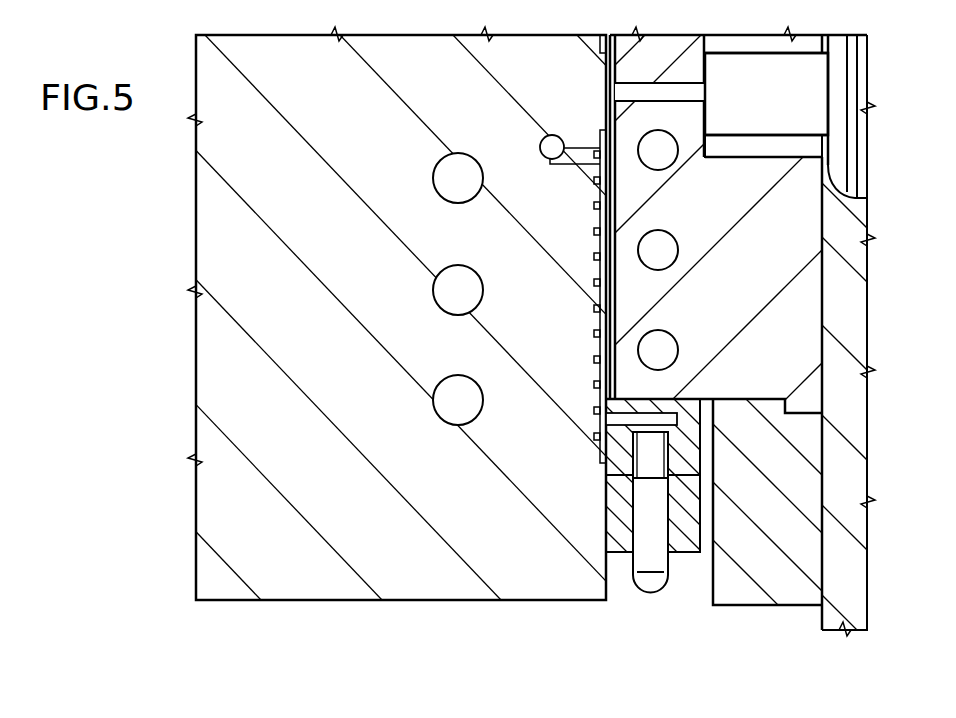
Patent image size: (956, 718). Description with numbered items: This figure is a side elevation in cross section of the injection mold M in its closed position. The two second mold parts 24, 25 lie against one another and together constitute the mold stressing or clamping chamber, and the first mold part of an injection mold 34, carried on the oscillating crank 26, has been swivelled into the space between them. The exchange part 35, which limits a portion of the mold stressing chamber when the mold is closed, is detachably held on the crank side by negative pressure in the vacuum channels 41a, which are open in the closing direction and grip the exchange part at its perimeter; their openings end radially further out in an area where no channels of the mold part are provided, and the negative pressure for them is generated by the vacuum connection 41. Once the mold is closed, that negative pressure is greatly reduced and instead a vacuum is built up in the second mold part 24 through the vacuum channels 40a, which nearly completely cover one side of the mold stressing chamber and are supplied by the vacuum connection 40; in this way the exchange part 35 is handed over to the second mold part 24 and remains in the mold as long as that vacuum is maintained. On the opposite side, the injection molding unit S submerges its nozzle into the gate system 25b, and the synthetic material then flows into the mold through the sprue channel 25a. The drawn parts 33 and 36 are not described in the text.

The second mold part 24 is at (308, 360).
The second mold part 25 is at (721, 316).
The sprue channel 25a is at (652, 94).
The gate system 25b is at (733, 146).
The oscillating crank 26 is at (620, 538).
The side plate 33 is at (827, 404).
The first mold part of an injection mold 34 is at (680, 448).
The exchange part 35 is at (602, 332).
The support block 36 is at (708, 513).
The vacuum connection 40 is at (540, 148).
The vacuum channels 40a is at (592, 234).
The vacuum connection 41 is at (650, 512).
The vacuum channels 41a is at (598, 441).
The injection molding unit S is at (762, 108).
The injection mold M is at (458, 612).